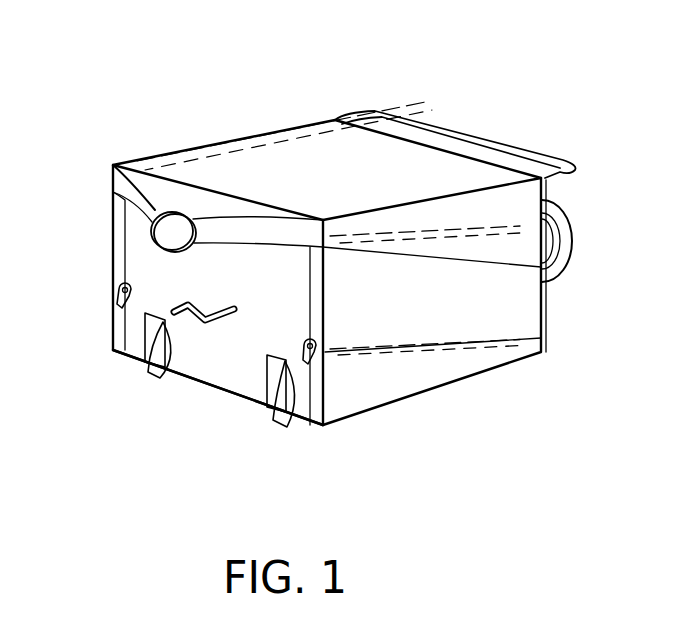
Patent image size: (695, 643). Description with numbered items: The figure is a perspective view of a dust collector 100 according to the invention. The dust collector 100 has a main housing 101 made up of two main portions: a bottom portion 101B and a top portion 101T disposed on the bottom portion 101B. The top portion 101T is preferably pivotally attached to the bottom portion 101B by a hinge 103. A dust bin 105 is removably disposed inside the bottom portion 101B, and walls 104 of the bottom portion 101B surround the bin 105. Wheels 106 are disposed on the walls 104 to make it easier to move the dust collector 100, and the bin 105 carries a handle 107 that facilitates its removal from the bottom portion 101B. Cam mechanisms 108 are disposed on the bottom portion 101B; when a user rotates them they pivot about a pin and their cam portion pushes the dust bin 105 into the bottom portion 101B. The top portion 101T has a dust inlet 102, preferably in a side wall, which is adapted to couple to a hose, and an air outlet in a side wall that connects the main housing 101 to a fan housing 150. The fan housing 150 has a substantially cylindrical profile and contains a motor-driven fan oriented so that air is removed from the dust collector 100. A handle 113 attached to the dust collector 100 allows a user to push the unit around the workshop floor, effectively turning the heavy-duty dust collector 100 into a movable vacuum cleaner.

The dust collector 100 is at (349, 264).
The main housing 101 is at (272, 147).
The top portion 101T is at (453, 217).
The bottom portion 101B is at (447, 367).
The dust inlet 102 is at (158, 187).
The hinge 103 is at (553, 270).
The walls 104 is at (117, 283).
The dust bin 105 is at (243, 358).
The wheels 106 is at (146, 370).
The handle 107 is at (201, 327).
The cam mechanisms 108 is at (318, 357).
The handle 113 is at (577, 165).
The fan housing 150 is at (577, 238).